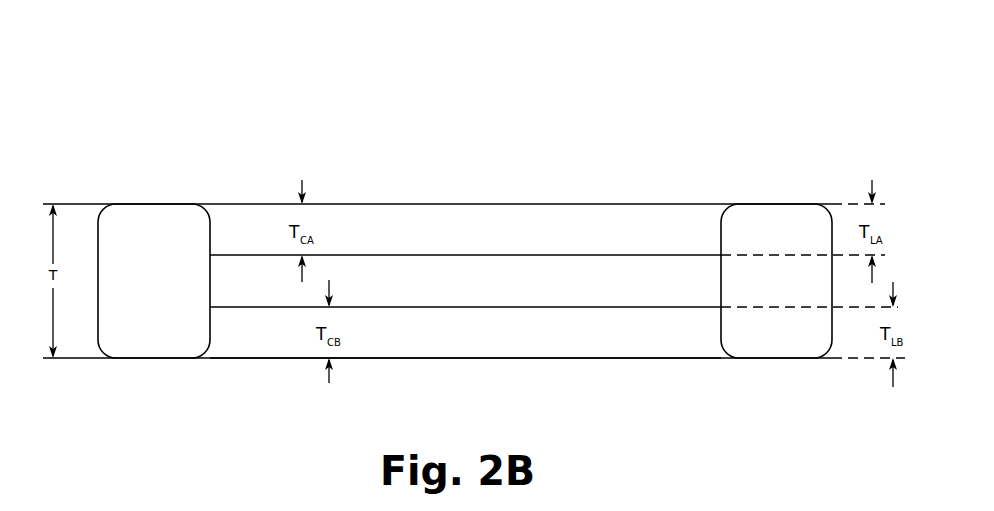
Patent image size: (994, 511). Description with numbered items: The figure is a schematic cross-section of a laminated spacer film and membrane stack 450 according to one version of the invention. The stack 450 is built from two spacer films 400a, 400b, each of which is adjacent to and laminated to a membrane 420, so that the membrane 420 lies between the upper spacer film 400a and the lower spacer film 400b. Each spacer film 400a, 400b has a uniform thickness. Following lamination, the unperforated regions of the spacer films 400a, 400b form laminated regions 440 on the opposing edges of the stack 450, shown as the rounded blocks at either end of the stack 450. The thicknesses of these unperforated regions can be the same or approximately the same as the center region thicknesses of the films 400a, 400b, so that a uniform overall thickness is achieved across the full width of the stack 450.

The stack 450 is at (558, 121).
The laminated region 440 is at (170, 204).
The spacer film 400a is at (445, 240).
The spacer film 400b is at (445, 342).
The membrane 420 is at (450, 288).